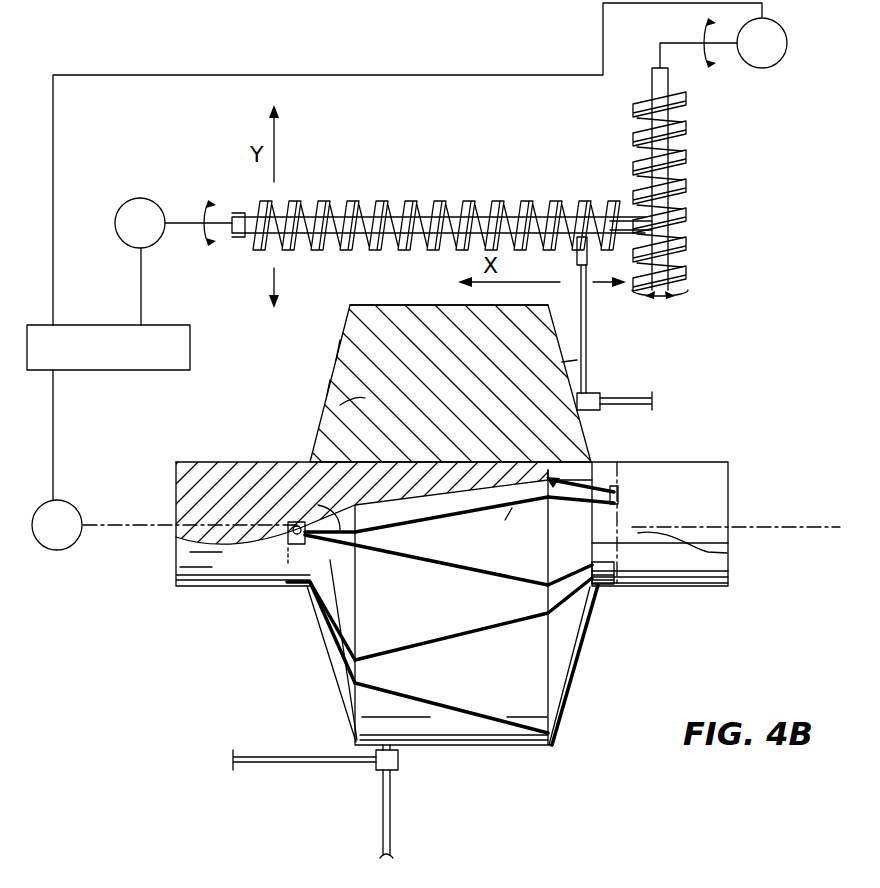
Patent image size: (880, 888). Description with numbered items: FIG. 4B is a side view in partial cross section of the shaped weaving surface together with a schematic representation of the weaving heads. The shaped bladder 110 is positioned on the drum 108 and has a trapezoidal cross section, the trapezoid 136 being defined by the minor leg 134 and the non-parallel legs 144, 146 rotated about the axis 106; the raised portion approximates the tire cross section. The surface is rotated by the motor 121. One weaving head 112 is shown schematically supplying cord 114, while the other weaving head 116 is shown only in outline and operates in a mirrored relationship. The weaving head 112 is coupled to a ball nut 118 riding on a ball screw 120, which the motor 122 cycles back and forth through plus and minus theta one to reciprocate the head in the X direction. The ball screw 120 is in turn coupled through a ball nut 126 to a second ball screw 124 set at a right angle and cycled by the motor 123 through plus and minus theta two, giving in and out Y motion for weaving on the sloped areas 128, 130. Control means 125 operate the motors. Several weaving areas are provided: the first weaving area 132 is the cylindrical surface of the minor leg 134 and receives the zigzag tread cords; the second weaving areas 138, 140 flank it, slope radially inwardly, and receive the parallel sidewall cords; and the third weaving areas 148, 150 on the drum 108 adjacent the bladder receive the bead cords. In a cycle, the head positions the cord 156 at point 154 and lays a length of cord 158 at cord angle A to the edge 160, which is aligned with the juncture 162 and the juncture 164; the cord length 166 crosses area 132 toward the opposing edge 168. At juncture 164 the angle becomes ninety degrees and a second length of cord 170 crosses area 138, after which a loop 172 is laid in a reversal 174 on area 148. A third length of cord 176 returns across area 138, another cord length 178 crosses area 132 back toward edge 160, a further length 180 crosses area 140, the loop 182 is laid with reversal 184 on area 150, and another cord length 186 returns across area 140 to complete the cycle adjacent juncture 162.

The axis 106 is at (812, 535).
The drum 108 is at (705, 500).
The shaped bladder 110 is at (466, 407).
The weaving head 112 is at (594, 393).
The cord 114 is at (645, 410).
The other weaving head 116 is at (380, 768).
The ball nut 118 is at (570, 252).
The ball screw 120 is at (355, 205).
The motor 121 is at (40, 547).
The motor 122 is at (120, 206).
The motor 123 is at (790, 40).
The second ball screw 124 is at (686, 172).
The control means 125 is at (141, 372).
The ball nut 126 is at (632, 222).
The sloped area 128 is at (315, 365).
The sloped area 130 is at (570, 328).
The first weaving area 132 is at (481, 616).
The minor leg 134 is at (416, 305).
The trapezoid 136 is at (340, 405).
The second weaving area 138 is at (300, 446).
The second weaving area 140 is at (600, 440).
The non-parallel leg 144 is at (326, 393).
The non-parallel leg 146 is at (577, 360).
The third weaving area 148 is at (210, 570).
The third weaving area 150 is at (727, 553).
The point 154 is at (575, 490).
The cord 156 is at (522, 508).
The length of cord 158 is at (446, 522).
The edge 160 is at (625, 470).
The juncture 162 is at (548, 665).
The juncture 164 is at (356, 700).
The cord length 166 is at (512, 505).
The opposing edge 168 is at (282, 566).
The second length of cord 170 is at (318, 512).
The loop 172 is at (288, 530).
The reversal 174 is at (298, 590).
The third length of cord 176 is at (342, 603).
The cord length 178 is at (432, 565).
The length of cord 180 is at (566, 578).
The loop 182 is at (620, 565).
The reversal 184 is at (598, 585).
The cord length 186 is at (568, 622).